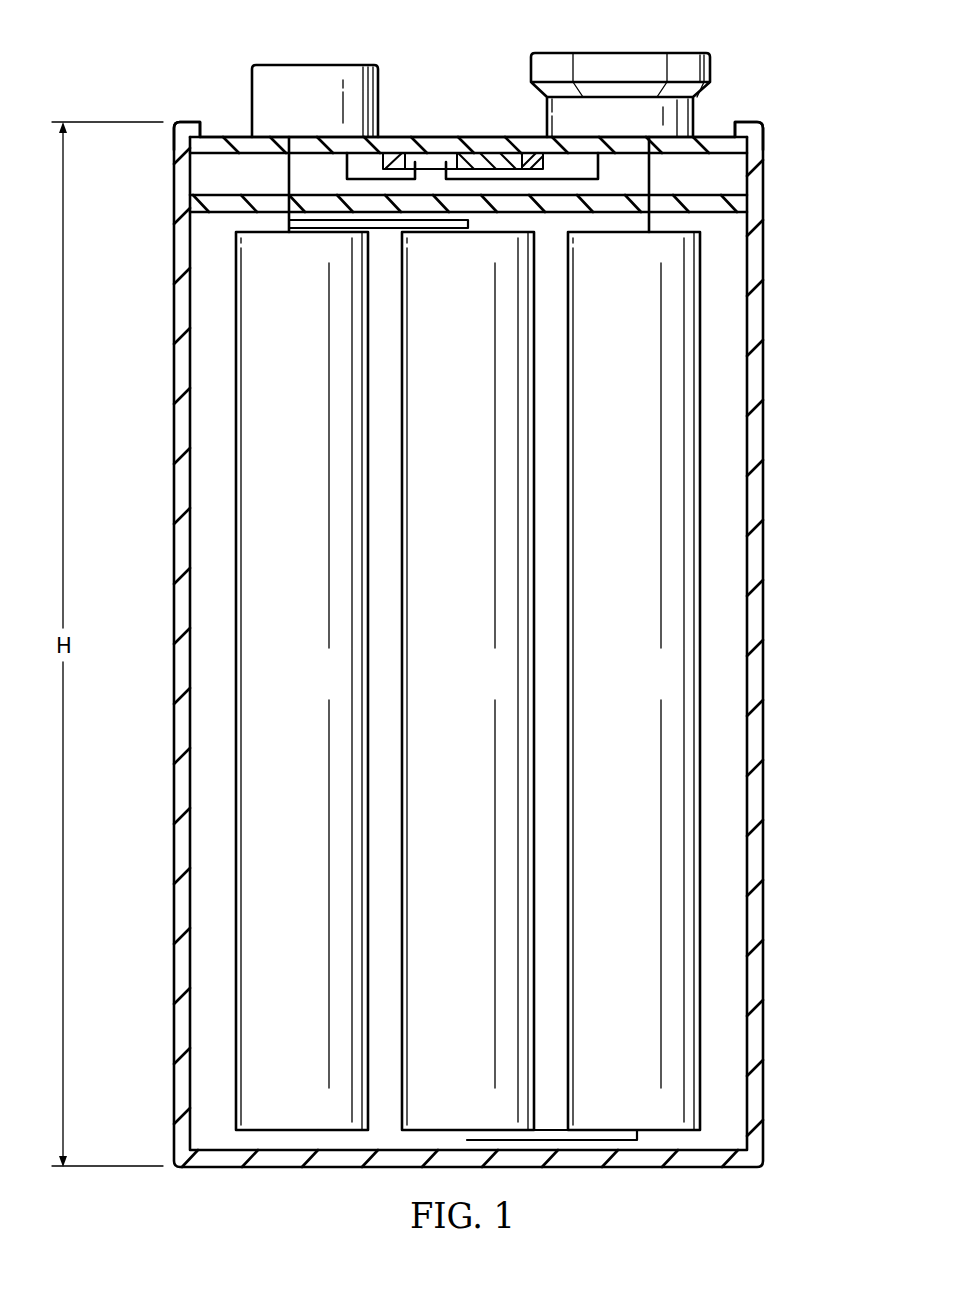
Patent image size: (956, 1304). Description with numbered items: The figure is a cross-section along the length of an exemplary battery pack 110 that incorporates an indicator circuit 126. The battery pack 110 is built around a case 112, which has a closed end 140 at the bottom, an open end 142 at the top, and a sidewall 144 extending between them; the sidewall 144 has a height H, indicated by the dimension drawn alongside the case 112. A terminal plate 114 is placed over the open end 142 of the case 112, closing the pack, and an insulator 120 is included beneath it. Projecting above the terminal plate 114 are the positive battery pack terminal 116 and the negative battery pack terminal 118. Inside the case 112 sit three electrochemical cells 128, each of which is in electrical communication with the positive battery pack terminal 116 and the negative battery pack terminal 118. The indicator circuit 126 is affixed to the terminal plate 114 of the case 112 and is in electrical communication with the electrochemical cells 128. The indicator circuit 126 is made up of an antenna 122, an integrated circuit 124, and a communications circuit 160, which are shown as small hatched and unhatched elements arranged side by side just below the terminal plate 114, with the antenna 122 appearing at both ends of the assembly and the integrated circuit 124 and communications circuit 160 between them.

The battery pack 110 is at (840, 189).
The case 112 is at (764, 722).
The terminal plate 114 is at (240, 137).
The positive battery pack terminal 116 is at (317, 63).
The negative battery pack terminal 118 is at (619, 53).
The insulator 120 is at (215, 195).
The antenna 122 is at (393, 156).
The integrated circuit 124 is at (438, 158).
The indicator circuit 126 is at (561, 164).
The electrochemical cell 128 is at (322, 685).
The closed end 140 is at (191, 1187).
The open end 142 is at (170, 104).
The sidewall 144 is at (152, 691).
The communications circuit 160 is at (486, 158).